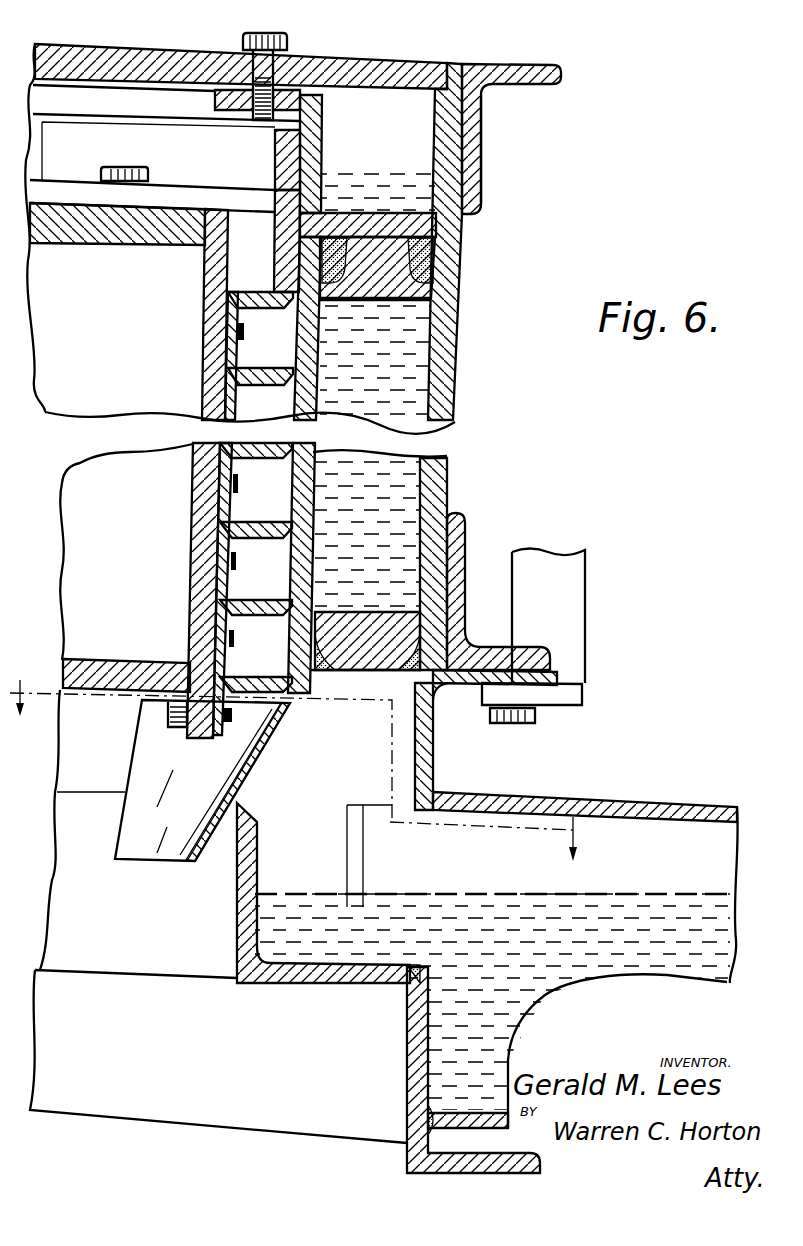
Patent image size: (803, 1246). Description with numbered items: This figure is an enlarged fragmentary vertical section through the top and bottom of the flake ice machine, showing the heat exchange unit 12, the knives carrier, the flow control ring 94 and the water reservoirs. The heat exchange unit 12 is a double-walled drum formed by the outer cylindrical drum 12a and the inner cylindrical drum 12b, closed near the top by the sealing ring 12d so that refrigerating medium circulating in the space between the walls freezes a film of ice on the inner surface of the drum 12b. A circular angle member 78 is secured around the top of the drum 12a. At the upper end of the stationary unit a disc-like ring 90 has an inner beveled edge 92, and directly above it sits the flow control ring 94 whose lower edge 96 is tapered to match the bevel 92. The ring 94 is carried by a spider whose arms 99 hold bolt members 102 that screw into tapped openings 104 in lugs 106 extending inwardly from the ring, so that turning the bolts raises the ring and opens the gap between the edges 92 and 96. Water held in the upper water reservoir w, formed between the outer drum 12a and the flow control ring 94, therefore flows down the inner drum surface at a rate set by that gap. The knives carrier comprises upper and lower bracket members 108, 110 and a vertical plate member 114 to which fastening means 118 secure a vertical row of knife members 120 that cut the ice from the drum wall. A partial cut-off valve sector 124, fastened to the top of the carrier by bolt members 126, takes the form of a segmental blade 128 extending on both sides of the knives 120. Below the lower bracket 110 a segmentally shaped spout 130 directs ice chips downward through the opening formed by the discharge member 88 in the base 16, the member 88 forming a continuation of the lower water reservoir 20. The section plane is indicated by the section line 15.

The heat exchange unit 12 is at (372, 298).
The cylindrical drum 12a is at (481, 143).
The inner cylindrical drum 12b is at (306, 352).
The sealing ring 12d is at (362, 618).
The section line 15 is at (316, 757).
The base 16 is at (410, 1060).
The lower water reservoir 20 is at (667, 890).
The circular angle member 78 is at (478, 106).
The discharge member 88 is at (233, 878).
The disc-like ring 90 is at (440, 231).
The inner beveled edge 92 is at (335, 220).
The flow control ring 94 is at (322, 150).
The lower edge 96 is at (302, 198).
The arms 99 is at (344, 68).
The bolt members 102 is at (244, 42).
The tapped openings 104 is at (232, 101).
The lugs 106 is at (232, 108).
The upper bracket member 108 is at (143, 232).
The lower bracket member 110 is at (135, 632).
The vertical plate member 114 is at (196, 502).
The bolt members 118 is at (238, 484).
The knife members 120 is at (248, 292).
The partial cut-off valve sector 124 is at (207, 164).
The bolt members 126 is at (124, 167).
The segmental blade 128 is at (276, 146).
The spout 130 is at (236, 761).
The upper water reservoir w is at (387, 203).